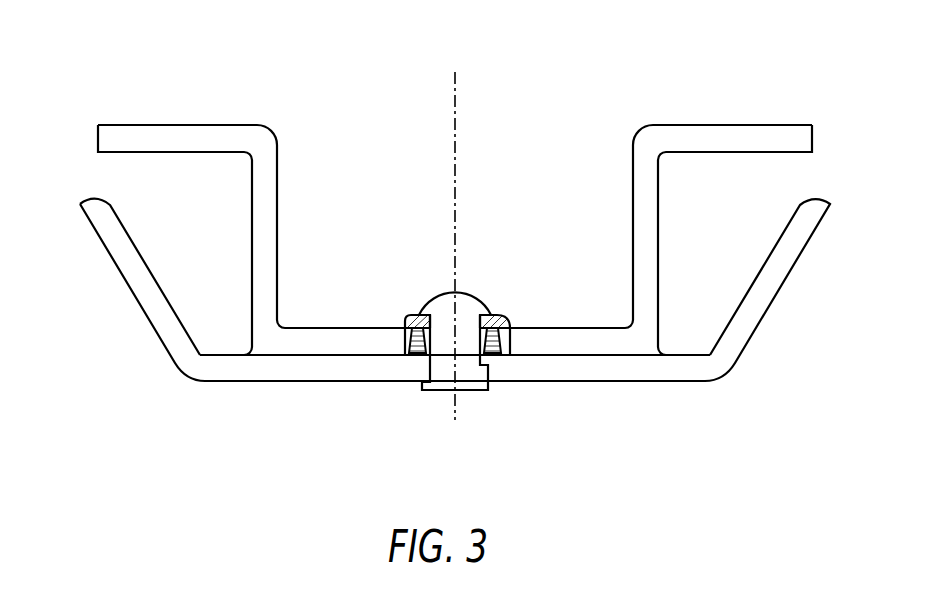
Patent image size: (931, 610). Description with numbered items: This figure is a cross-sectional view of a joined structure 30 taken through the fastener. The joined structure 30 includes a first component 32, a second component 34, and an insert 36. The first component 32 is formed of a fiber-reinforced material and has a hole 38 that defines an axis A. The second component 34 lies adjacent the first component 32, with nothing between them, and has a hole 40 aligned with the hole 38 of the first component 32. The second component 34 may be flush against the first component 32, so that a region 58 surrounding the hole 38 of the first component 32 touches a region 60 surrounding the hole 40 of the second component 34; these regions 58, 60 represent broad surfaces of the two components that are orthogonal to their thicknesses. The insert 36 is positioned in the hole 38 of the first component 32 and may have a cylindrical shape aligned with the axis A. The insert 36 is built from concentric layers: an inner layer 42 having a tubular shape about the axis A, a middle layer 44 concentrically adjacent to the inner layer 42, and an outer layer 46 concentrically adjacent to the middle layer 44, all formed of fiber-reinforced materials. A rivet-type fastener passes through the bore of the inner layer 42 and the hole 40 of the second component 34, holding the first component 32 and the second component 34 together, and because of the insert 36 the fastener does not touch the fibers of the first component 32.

The joined structure 30 is at (110, 44).
The first component 32 is at (182, 125).
The second component 34 is at (123, 282).
The insert 36 is at (497, 313).
The hole 38 is at (508, 348).
The hole 40 is at (478, 392).
The inner layer 42 is at (421, 357).
The middle layer 44 is at (410, 353).
The outer layer 46 is at (398, 353).
The region 58 is at (318, 356).
The region 60 is at (343, 352).